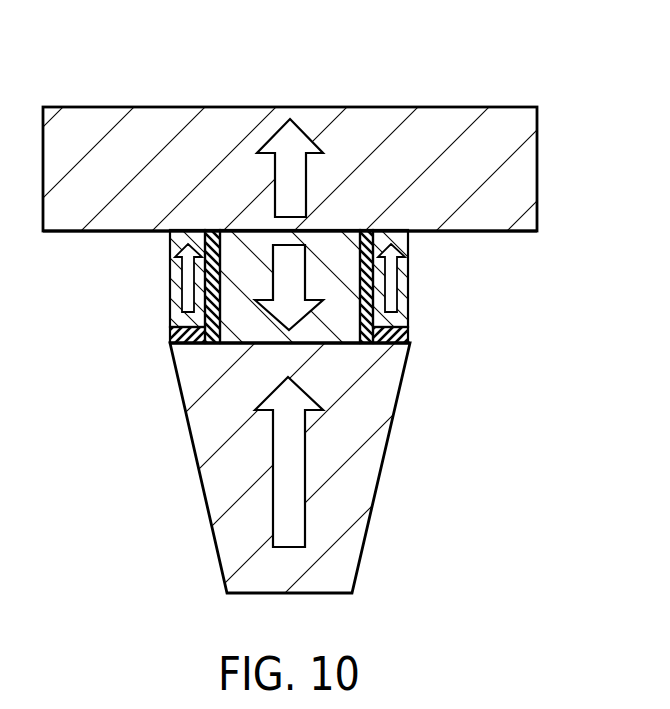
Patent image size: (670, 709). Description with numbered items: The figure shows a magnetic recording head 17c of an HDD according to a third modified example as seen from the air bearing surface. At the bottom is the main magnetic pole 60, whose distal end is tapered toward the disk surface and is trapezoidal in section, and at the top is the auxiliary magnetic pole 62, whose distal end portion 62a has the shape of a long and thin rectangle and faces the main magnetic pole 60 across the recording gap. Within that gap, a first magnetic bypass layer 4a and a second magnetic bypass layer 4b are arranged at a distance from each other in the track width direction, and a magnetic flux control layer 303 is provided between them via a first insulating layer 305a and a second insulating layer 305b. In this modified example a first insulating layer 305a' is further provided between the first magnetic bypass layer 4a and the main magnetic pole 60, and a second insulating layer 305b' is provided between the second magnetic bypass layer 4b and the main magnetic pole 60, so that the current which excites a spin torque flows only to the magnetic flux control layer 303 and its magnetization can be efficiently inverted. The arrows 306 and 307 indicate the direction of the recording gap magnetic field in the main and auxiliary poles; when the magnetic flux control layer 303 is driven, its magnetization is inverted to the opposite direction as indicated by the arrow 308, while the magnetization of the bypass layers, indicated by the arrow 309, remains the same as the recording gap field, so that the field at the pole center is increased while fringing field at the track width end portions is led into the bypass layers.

The magnetic recording head 17c is at (503, 88).
The auxiliary magnetic pole 62 is at (523, 160).
The distal end portion of the auxiliary magnetic pole 62a is at (482, 205).
The arrow 307 is at (289, 117).
The first magnetic bypass layer 4a is at (180, 272).
The second magnetic bypass layer 4b is at (410, 275).
The first insulating layer 305a is at (335, 350).
The first insulating layer 305a' is at (272, 350).
The second insulating layer 305b is at (345, 350).
The second insulating layer 305b' is at (336, 350).
The arrow 309 is at (393, 305).
The arrow 308 is at (295, 320).
The magnetic flux control layer 303 is at (215, 358).
The main magnetic pole 60 is at (370, 457).
The arrow 306 is at (295, 518).